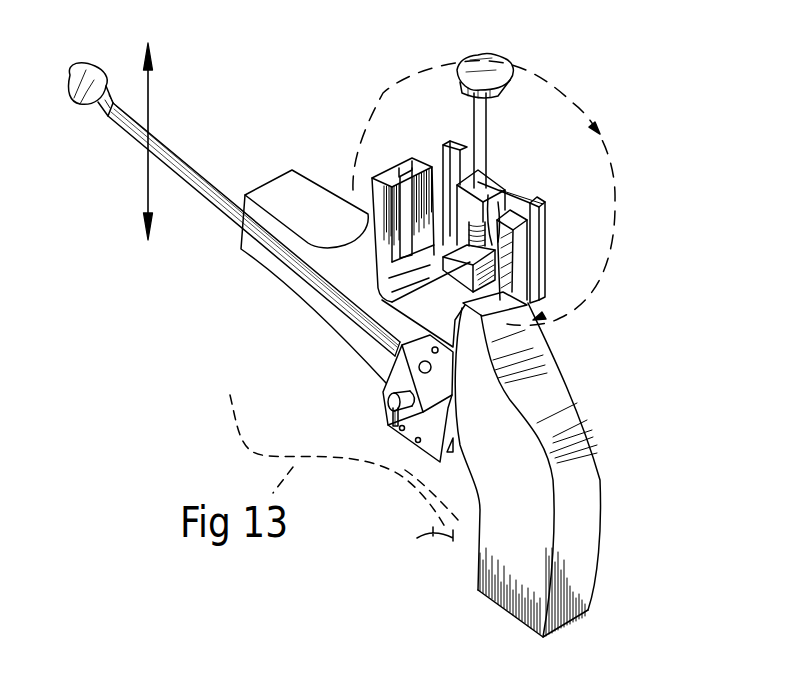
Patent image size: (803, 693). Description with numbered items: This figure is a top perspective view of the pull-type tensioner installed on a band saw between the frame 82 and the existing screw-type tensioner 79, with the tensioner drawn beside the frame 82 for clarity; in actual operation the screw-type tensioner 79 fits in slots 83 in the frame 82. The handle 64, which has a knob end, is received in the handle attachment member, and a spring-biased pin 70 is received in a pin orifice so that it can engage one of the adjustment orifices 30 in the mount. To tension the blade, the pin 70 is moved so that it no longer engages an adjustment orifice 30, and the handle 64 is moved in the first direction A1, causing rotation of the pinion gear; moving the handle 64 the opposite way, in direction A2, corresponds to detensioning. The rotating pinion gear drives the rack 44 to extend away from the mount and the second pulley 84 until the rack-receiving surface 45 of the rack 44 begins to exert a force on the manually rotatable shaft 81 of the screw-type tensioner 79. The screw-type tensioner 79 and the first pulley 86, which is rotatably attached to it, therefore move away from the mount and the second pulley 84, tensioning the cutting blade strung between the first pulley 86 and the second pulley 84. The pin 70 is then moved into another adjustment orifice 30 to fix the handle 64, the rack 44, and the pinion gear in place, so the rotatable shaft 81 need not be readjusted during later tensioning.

The adjustment orifices 30 is at (392, 380).
The rack 44 is at (505, 284).
The rack-receiving surface 45 is at (497, 201).
The handle 64 is at (240, 218).
The pin 70 is at (388, 411).
The screw-type tensioner 79 is at (552, 228).
The manually rotatable shaft 81 is at (490, 130).
The frame 82 is at (590, 406).
The slots 83 is at (408, 168).
The second pulley 84 is at (324, 449).
The first pulley 86 is at (553, 91).
The first direction A1 is at (150, 98).
The direction arrow A2 is at (148, 201).